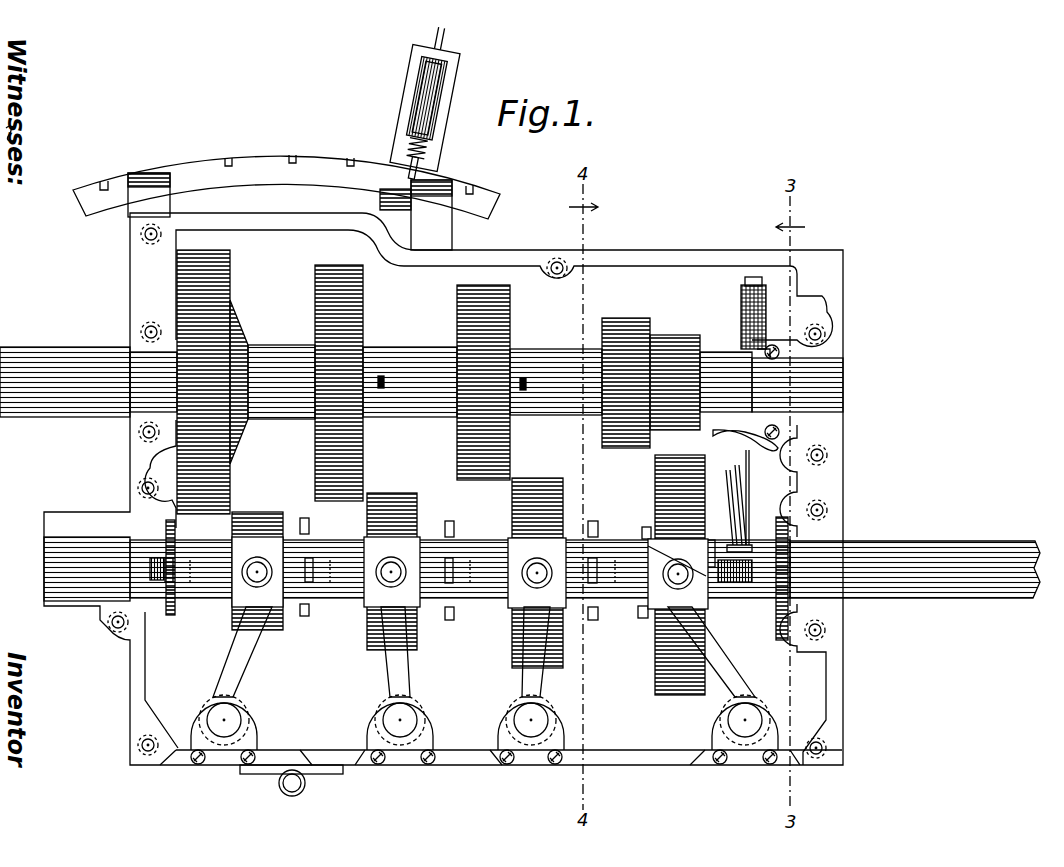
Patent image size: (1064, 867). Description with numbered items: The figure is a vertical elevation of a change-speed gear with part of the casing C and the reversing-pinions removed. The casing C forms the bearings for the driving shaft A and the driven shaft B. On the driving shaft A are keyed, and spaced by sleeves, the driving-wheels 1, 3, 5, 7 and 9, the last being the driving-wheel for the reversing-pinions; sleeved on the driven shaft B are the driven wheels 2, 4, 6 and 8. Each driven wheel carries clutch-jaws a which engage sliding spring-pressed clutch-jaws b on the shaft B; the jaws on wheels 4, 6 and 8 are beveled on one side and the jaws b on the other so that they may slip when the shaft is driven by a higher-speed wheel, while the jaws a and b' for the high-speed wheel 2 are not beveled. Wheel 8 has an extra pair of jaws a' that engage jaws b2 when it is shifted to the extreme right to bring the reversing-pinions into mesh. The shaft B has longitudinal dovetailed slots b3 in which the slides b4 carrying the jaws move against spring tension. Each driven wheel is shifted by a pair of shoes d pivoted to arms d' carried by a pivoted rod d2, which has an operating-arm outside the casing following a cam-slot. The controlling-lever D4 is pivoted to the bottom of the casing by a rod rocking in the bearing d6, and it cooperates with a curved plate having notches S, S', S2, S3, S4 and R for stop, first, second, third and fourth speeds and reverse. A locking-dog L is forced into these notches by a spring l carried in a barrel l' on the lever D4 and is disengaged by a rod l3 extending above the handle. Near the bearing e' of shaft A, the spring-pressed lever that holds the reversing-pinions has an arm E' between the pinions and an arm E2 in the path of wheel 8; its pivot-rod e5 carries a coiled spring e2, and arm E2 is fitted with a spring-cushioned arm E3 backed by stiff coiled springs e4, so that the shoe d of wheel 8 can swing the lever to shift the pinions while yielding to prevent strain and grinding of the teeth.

The driving-wheel 1 is at (229, 281).
The driven wheel 2 is at (258, 512).
The driving-wheel 3 is at (363, 288).
The driven wheel 4 is at (412, 496).
The driving-wheel 5 is at (510, 298).
The driven wheel 6 is at (553, 480).
The driving-wheel 7 is at (626, 322).
The driven wheel 8 is at (655, 486).
The driving-wheel 9 is at (676, 337).
The driving shaft A is at (68, 346).
The driven shaft B is at (897, 558).
The casing C is at (838, 437).
The controlling-lever D4 is at (402, 80).
The arm of lever E E' is at (761, 433).
The arm of lever E E2 is at (742, 496).
The spring-cushioned arm E3 is at (748, 470).
The locking-dog L is at (356, 150).
The notch R is at (479, 180).
The notch S is at (286, 200).
The notch S' is at (347, 151).
The notch S2 is at (297, 147).
The notch S3 is at (229, 150).
The notch S4 is at (107, 173).
The clutch-jaws a is at (403, 577).
The extra clutch-jaws a' is at (711, 539).
The sliding spring-pressed clutch-jaws b is at (475, 576).
The clutch-jaws b' is at (170, 579).
The stationary clutch-jaws b2 is at (783, 516).
The dovetailed slots b3 is at (158, 580).
The slides b4 is at (236, 590).
The shoes d is at (470, 573).
The arms d' is at (484, 652).
The pivoted rod d2 is at (232, 720).
The bearing d6 is at (292, 797).
The bearing of shaft A e' is at (770, 337).
The spring e2 is at (741, 312).
The coiled springs e4 is at (748, 520).
The pivot-rod e5 is at (753, 277).
The spring l is at (428, 140).
The barrel l' is at (436, 97).
The rod l3 is at (443, 42).